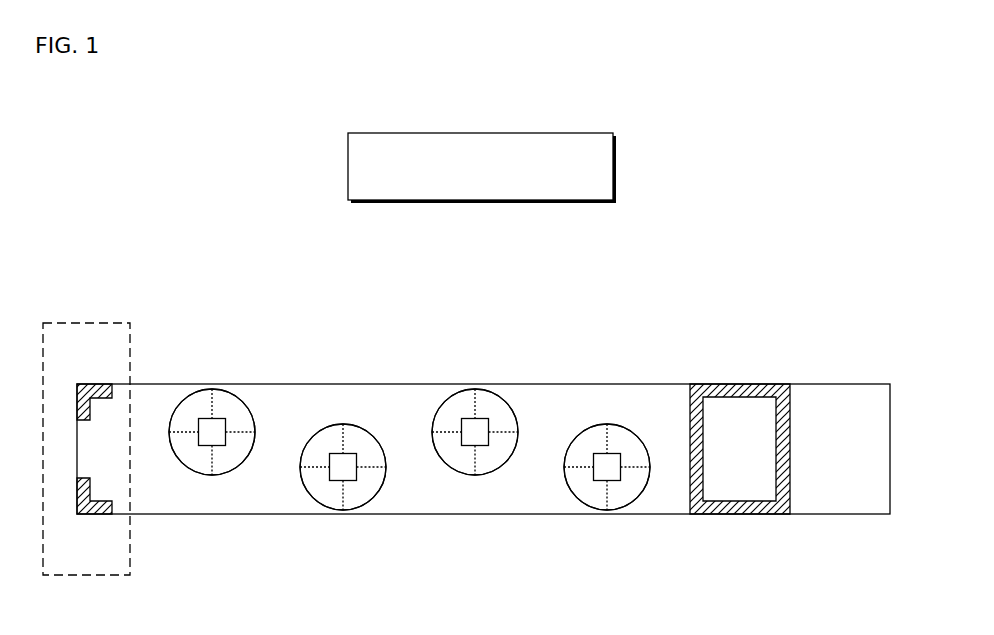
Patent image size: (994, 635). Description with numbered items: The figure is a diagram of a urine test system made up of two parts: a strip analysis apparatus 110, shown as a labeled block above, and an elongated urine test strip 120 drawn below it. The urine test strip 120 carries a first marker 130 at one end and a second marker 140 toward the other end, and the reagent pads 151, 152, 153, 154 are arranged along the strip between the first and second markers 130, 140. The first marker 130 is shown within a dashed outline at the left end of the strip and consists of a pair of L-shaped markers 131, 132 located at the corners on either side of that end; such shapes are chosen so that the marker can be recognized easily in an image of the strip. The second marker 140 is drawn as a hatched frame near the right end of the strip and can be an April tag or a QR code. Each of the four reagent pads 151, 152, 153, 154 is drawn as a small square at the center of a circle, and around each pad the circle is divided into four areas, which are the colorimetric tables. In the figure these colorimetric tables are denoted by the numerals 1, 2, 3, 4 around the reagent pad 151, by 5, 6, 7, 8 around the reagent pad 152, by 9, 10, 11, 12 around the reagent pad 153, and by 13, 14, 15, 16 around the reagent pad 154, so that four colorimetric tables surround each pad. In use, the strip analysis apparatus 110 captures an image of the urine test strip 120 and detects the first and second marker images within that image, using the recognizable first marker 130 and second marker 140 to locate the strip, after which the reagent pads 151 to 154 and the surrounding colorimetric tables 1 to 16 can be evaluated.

The strip analysis apparatus 110 is at (478, 133).
The urine test strip 120 is at (829, 296).
The first marker 130 is at (87, 322).
The L-shaped marker 131 is at (80, 383).
The L-shaped marker 132 is at (80, 515).
The second marker 140 is at (740, 383).
The reagent pad 151 is at (217, 447).
The reagent pad 152 is at (347, 453).
The reagent pad 153 is at (480, 446).
The reagent pad 154 is at (609, 453).
The colorimetric table 1 is at (190, 410).
The colorimetric table 2 is at (233, 410).
The colorimetric table 3 is at (190, 453).
The colorimetric table 4 is at (233, 453).
The colorimetric table 5 is at (321, 445).
The colorimetric table 6 is at (364, 445).
The colorimetric table 7 is at (321, 488).
The colorimetric table 8 is at (364, 488).
The colorimetric table 9 is at (453, 410).
The colorimetric table 10 is at (496, 410).
The colorimetric table 11 is at (453, 453).
The colorimetric table 12 is at (496, 453).
The colorimetric table 13 is at (585, 445).
The colorimetric table 14 is at (628, 445).
The colorimetric table 15 is at (585, 488).
The colorimetric table 16 is at (628, 488).